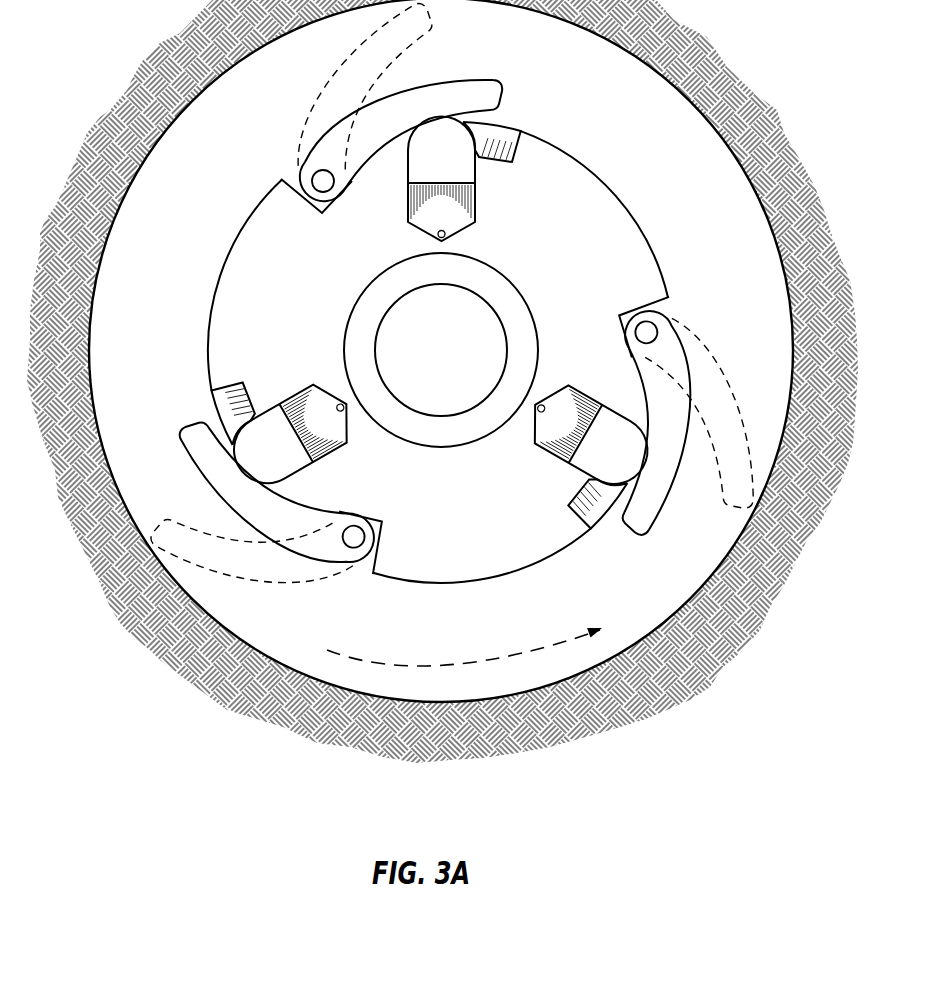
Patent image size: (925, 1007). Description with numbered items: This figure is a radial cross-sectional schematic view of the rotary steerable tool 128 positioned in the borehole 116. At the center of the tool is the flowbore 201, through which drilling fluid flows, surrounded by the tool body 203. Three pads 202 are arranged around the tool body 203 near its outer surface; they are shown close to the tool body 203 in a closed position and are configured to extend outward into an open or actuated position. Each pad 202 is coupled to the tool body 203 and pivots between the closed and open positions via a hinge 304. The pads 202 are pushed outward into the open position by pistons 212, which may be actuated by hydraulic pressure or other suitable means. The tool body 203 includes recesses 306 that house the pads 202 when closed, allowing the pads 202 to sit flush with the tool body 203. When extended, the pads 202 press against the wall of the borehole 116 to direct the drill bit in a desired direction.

The borehole 116 is at (735, 162).
The rotary steerable tool 128 is at (226, 210).
The flowbore 201 is at (461, 367).
The pads 202 is at (437, 90).
The tool body 203 is at (232, 278).
The piston 212 is at (465, 165).
The hinges 304 is at (320, 177).
The recesses 306 is at (505, 133).